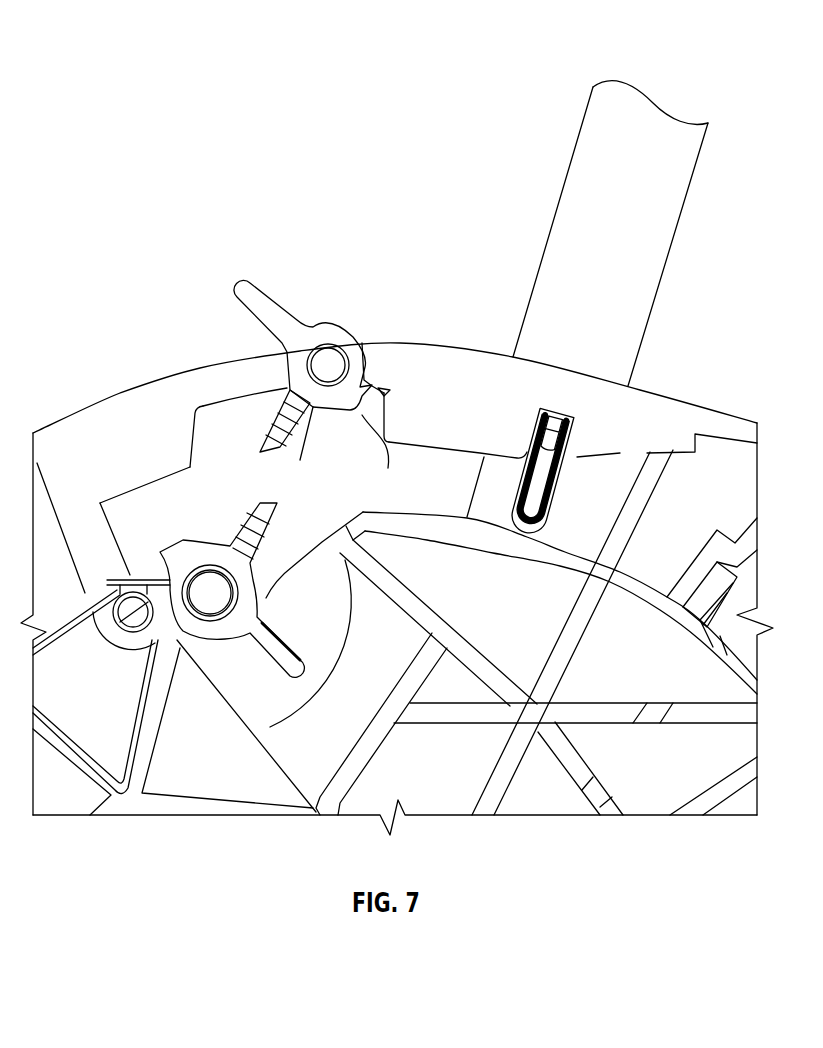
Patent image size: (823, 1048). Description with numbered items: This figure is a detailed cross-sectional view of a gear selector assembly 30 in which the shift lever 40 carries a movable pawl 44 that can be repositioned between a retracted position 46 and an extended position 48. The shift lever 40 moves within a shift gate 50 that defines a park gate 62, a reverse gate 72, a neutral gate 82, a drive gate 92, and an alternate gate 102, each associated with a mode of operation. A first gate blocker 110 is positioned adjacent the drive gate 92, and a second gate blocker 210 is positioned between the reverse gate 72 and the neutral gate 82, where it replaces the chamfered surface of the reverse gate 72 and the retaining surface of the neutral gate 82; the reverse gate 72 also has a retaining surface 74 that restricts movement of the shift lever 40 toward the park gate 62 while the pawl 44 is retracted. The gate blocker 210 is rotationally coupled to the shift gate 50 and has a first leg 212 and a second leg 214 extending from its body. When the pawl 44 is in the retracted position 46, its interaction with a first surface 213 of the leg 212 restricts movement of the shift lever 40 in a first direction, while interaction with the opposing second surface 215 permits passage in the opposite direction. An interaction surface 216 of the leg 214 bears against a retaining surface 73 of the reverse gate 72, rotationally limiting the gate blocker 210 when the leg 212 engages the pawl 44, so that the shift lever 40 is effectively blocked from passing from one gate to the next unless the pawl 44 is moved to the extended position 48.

The gear selector assembly 30 is at (710, 92).
The shift lever 40 is at (672, 212).
The pawl 44 is at (576, 422).
The retracted position 46 is at (567, 450).
The extended position 48 is at (546, 504).
The shift gate 50 is at (503, 372).
The park gate 62 is at (562, 400).
The reverse gate 72 is at (379, 374).
The retaining surface 73 is at (389, 391).
The retaining surface 74 is at (386, 418).
The neutral gate 82 is at (262, 378).
The drive gate 92 is at (202, 398).
The alternate gate 102 is at (163, 448).
The gate blocker 110 is at (220, 648).
The gate blocker 210 is at (322, 303).
The leg 212 is at (255, 515).
The first surface 213 is at (266, 432).
The leg 214 is at (353, 451).
The second surface 215 is at (303, 438).
The interaction surface 216 is at (366, 345).